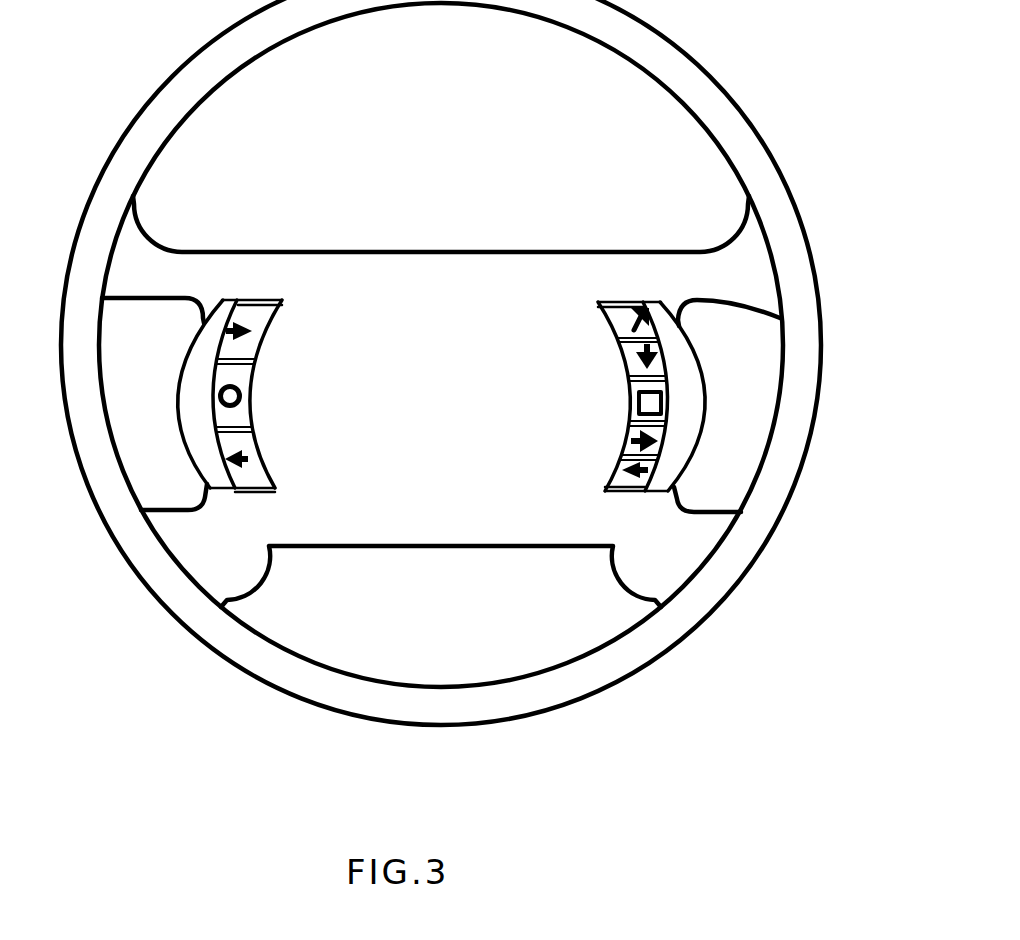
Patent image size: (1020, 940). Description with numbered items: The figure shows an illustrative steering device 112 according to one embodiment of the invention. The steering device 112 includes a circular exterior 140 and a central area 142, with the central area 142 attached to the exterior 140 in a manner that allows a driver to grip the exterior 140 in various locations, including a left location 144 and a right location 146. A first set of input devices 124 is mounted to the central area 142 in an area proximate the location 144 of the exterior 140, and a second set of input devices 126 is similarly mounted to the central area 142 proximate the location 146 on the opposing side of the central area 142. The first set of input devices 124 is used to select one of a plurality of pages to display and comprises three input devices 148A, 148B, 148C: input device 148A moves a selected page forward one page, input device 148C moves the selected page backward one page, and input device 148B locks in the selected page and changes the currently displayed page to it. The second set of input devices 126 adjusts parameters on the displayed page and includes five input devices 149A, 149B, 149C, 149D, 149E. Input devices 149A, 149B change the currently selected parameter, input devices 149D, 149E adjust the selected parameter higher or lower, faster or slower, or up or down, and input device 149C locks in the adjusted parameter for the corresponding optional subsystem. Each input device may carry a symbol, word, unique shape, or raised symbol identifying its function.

The steering device 112 is at (111, 724).
The circular exterior 140 is at (213, 55).
The central area 142 is at (447, 396).
The location 144 is at (45, 461).
The location 146 is at (823, 446).
The first set of input devices 124 is at (293, 497).
The second set of input devices 126 is at (596, 461).
The input device 148A is at (257, 312).
The input device 148B is at (245, 373).
The input device 148C is at (244, 436).
The input device 149A is at (612, 307).
The input device 149B is at (632, 350).
The input device 149C is at (630, 386).
The input device 149D is at (630, 433).
The input device 149E is at (621, 481).